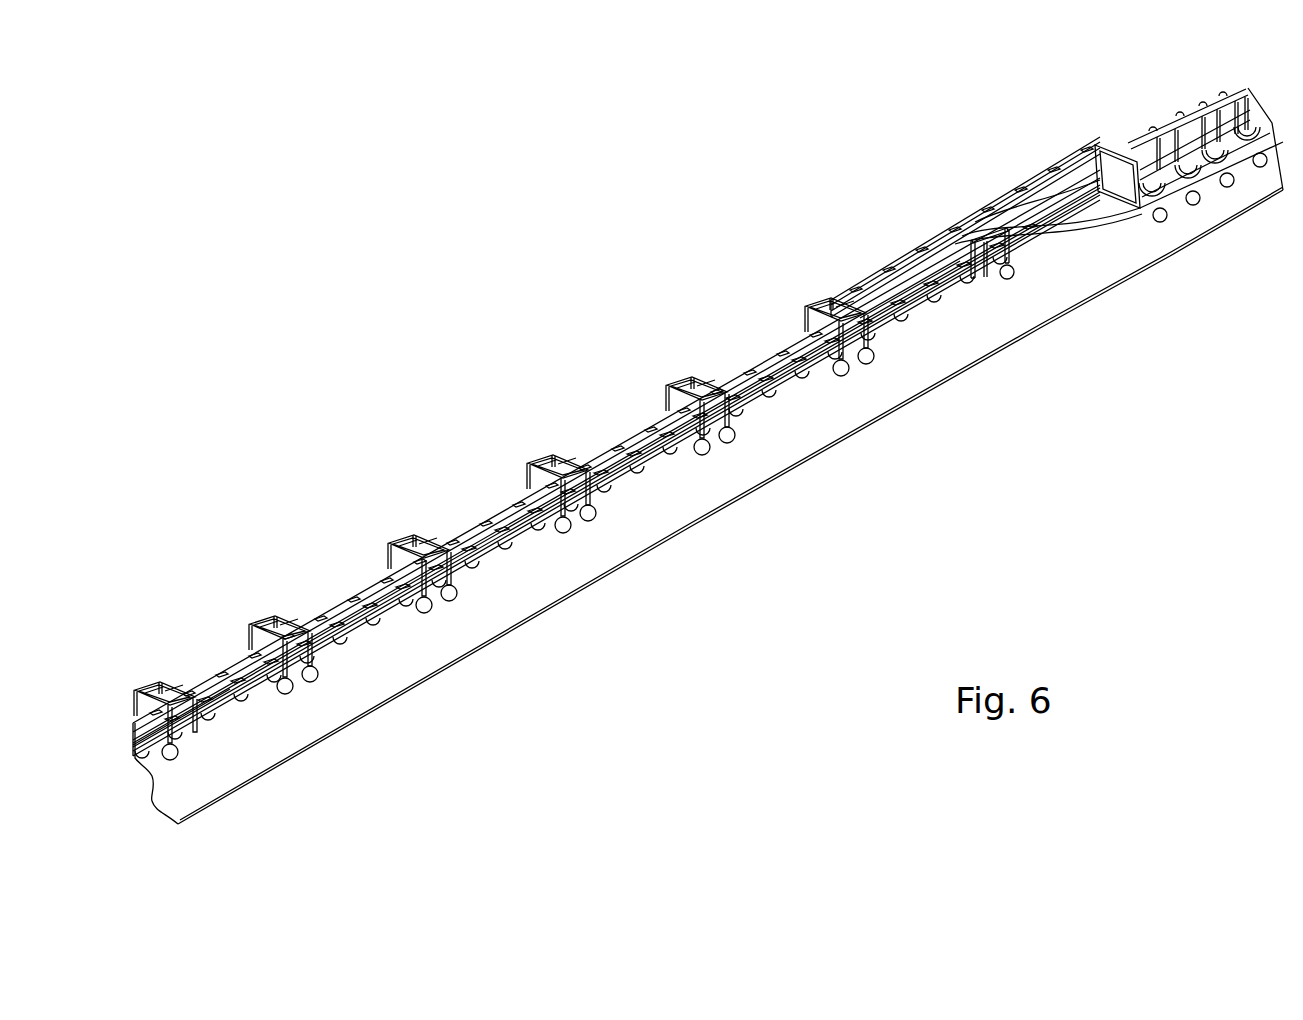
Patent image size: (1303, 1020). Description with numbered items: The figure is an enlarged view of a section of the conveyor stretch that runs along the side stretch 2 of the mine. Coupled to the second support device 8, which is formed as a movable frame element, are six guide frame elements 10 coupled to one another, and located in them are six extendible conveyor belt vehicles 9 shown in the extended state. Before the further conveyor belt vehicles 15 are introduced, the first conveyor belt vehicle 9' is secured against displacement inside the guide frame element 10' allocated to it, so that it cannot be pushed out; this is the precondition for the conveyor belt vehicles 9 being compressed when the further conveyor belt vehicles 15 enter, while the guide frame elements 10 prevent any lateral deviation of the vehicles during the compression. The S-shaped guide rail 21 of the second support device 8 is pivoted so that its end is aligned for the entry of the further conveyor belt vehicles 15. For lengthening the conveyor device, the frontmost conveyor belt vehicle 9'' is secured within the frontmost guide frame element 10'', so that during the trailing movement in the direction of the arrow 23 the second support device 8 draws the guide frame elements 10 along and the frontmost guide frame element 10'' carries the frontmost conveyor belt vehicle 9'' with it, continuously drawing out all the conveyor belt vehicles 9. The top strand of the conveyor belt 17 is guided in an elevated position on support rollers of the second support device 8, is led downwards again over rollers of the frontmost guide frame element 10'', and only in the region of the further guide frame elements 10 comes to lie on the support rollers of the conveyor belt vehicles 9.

The side stretch 2 is at (585, 547).
The second support device 8 is at (1022, 188).
The conveyor belt vehicles 9 is at (616, 468).
The first conveyor belt vehicle 9' is at (227, 752).
The frontmost conveyor belt vehicle 9'' is at (919, 347).
The guide frame elements 10 is at (500, 483).
The guide frame element allocated to the first conveyor belt vehicle 10' is at (165, 674).
The frontmost guide frame element 10'' is at (841, 281).
The further conveyor belt vehicles 15 is at (1190, 200).
The top strand of the conveyor belt 17 is at (1125, 147).
The S-shaped guide rail 21 is at (1090, 225).
The arrow 23 is at (1015, 382).